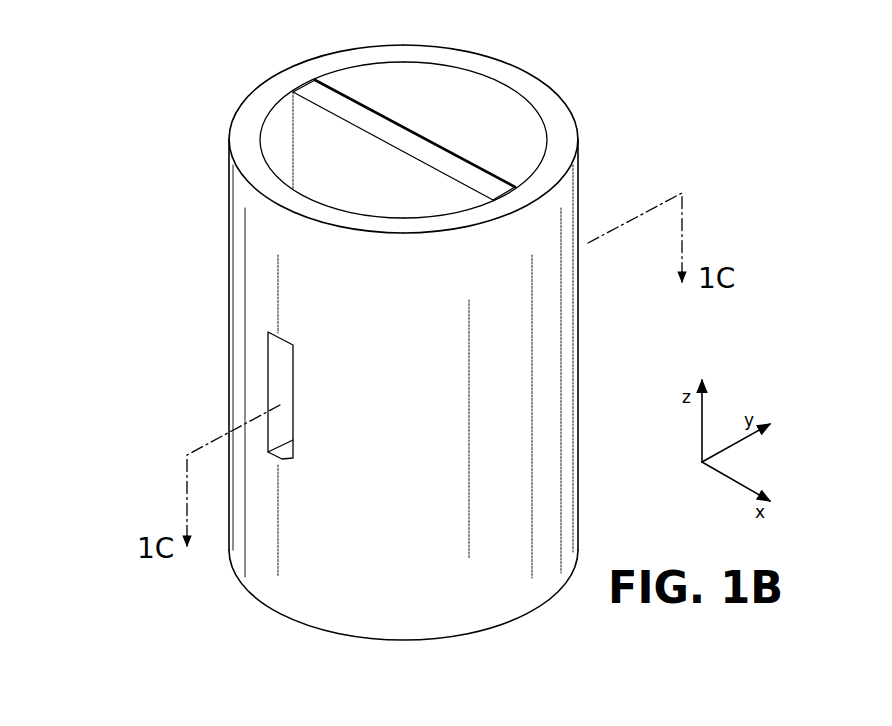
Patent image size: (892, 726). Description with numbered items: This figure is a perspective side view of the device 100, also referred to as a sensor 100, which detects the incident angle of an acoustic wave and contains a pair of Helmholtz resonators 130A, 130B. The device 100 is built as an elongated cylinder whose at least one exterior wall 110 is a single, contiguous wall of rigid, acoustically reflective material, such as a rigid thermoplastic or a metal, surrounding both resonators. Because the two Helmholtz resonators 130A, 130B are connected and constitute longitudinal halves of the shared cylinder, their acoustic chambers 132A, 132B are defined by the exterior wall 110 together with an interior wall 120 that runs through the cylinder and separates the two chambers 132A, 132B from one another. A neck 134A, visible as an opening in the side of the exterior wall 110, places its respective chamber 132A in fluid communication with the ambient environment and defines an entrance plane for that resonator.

The device 100 is at (162, 79).
The exterior wall 110 is at (252, 267).
The interior wall 120 is at (386, 128).
The Helmholtz resonator 130A is at (234, 105).
The Helmholtz resonator 130B is at (568, 95).
The chamber 132A is at (281, 122).
The chamber 132B is at (476, 104).
The neck 134A is at (272, 385).